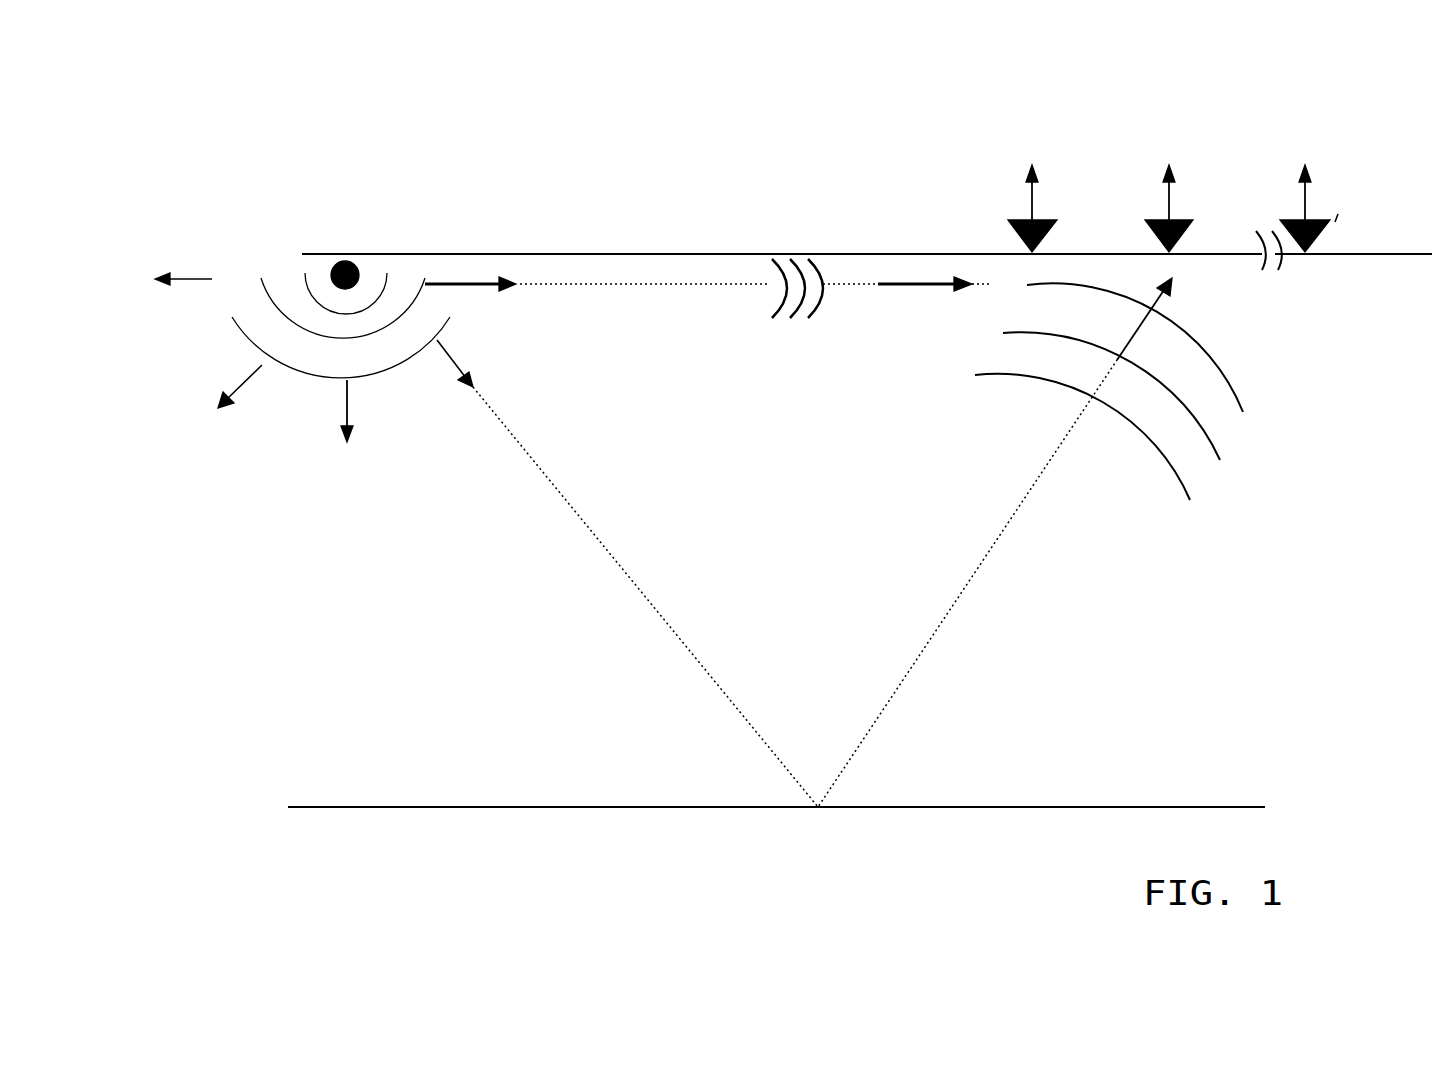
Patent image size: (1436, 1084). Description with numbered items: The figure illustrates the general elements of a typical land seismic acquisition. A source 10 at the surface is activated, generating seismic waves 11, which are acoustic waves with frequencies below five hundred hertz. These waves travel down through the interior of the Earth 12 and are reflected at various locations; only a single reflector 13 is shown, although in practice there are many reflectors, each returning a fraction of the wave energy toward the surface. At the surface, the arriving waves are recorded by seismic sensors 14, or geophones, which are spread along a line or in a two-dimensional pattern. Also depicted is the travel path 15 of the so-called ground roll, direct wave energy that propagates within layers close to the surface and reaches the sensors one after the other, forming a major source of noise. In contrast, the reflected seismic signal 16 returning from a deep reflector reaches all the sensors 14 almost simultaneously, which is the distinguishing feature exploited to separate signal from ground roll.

The source 10 is at (349, 261).
The seismic waves 11 is at (327, 380).
The interior of the Earth 12 is at (401, 586).
The reflector 13 is at (602, 807).
The seismic sensors 14 is at (1040, 220).
The travel path of the ground roll 15 is at (757, 285).
The reflected seismic signal 16 is at (1105, 410).